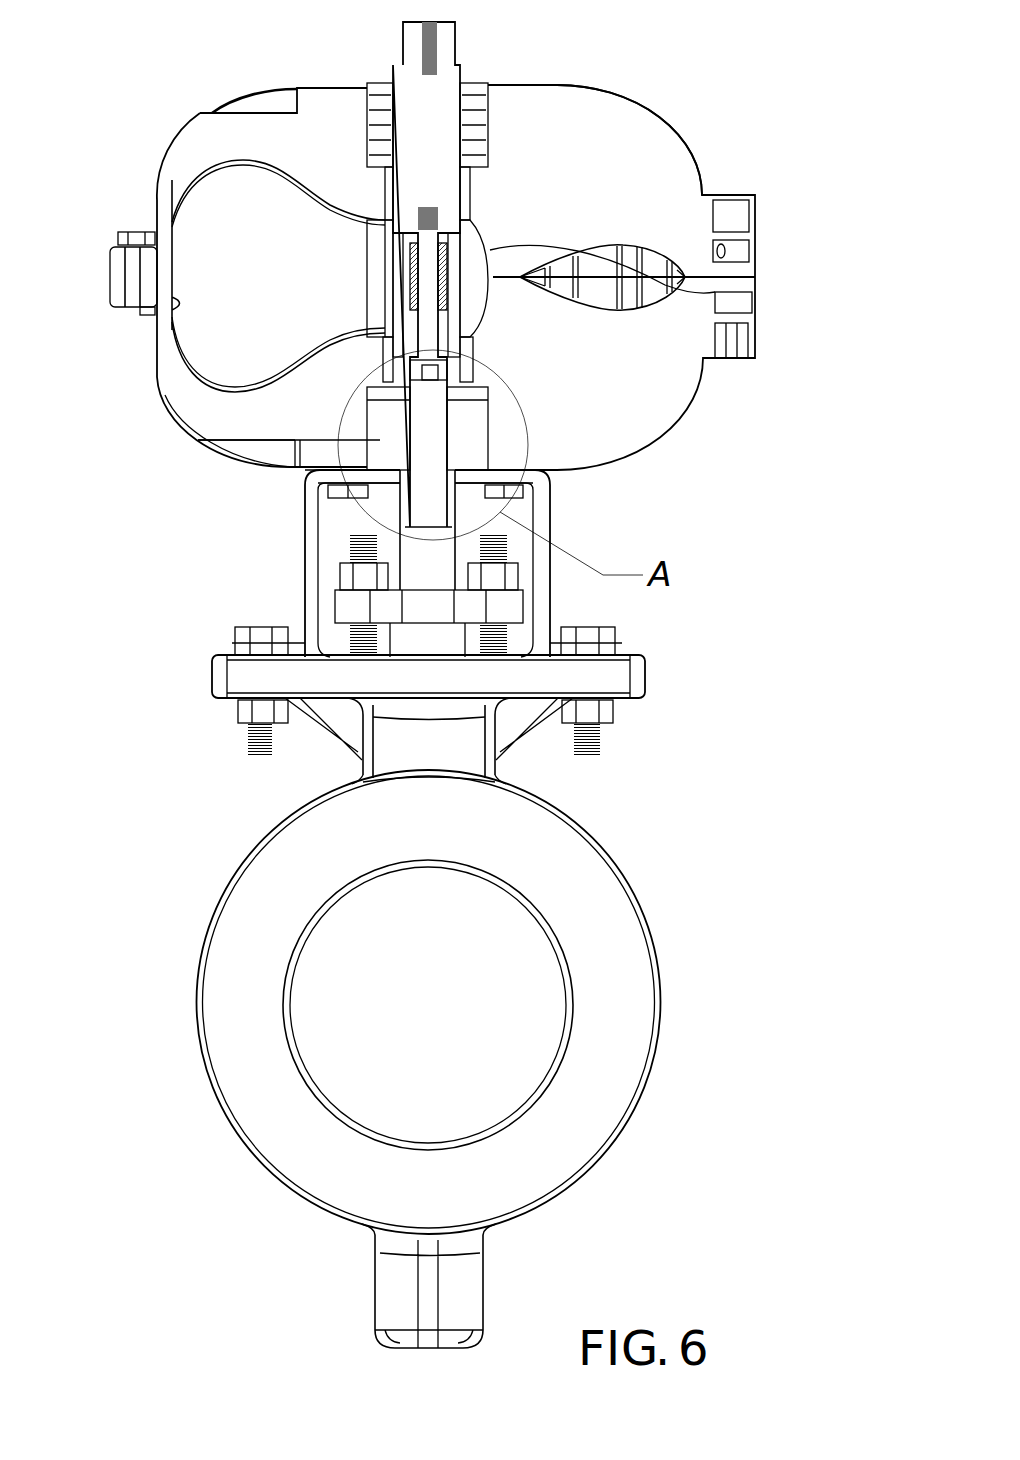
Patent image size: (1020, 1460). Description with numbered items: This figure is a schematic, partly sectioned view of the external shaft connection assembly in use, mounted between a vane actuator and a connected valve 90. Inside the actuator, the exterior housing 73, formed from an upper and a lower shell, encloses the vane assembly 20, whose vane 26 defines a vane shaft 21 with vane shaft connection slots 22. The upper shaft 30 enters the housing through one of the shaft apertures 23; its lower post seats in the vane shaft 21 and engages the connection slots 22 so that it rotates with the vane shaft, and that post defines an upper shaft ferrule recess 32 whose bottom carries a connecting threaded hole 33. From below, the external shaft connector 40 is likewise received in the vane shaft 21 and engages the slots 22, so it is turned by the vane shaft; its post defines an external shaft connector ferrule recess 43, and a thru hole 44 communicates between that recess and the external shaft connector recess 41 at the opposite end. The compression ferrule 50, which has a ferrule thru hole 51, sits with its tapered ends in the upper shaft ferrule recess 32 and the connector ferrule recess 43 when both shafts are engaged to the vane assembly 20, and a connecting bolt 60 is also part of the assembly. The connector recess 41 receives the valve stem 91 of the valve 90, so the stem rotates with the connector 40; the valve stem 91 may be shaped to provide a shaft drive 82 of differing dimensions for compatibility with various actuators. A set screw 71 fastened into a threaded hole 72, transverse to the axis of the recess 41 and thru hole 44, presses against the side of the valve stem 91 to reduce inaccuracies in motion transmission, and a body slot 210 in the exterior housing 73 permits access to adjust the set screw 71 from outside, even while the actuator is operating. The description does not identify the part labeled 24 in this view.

The vane assembly 20 is at (180, 181).
The vane shaft 21 is at (383, 185).
The vane shaft connection slots 22 is at (390, 277).
The shaft apertures 23 is at (473, 190).
The side cover plate 24 is at (155, 324).
The vane 26 is at (197, 215).
The upper shaft 30 is at (395, 67).
The upper shaft ferrule recess 32 is at (453, 248).
The connecting threaded hole 33 is at (430, 213).
The external shaft connector 40 is at (475, 390).
The external shaft connector recess 41 is at (478, 378).
The external shaft connector ferrule recess 43 is at (490, 310).
The thru hole 44 is at (480, 340).
The compression ferrule 50 is at (390, 251).
The ferrule thru hole 51 is at (392, 262).
The connecting bolt 60 is at (753, 277).
The set screw 71 is at (405, 528).
The threaded hole 72 is at (325, 420).
The exterior housing 73 is at (637, 145).
The shaft drive 82 is at (447, 437).
The valve 90 is at (233, 1045).
The valve stem 91 is at (410, 557).
The body slot 210 is at (278, 450).